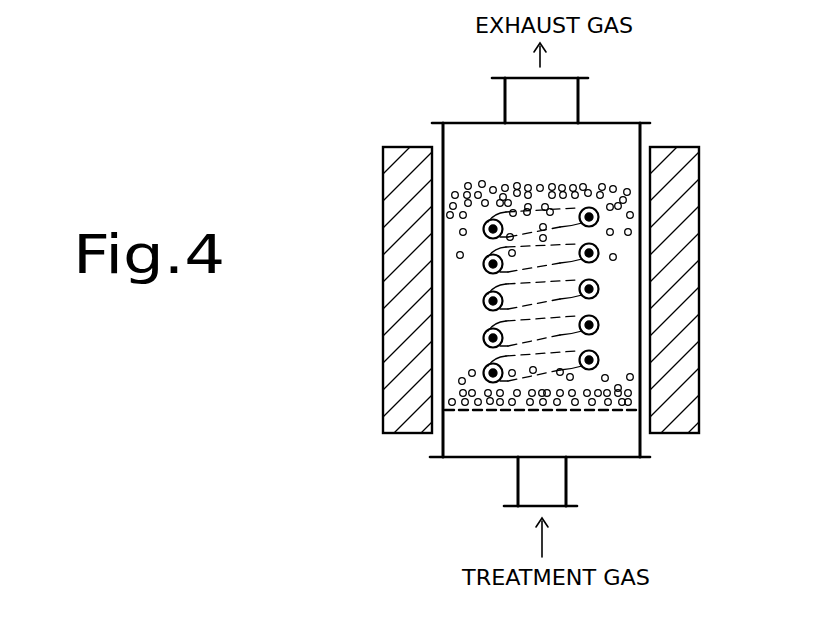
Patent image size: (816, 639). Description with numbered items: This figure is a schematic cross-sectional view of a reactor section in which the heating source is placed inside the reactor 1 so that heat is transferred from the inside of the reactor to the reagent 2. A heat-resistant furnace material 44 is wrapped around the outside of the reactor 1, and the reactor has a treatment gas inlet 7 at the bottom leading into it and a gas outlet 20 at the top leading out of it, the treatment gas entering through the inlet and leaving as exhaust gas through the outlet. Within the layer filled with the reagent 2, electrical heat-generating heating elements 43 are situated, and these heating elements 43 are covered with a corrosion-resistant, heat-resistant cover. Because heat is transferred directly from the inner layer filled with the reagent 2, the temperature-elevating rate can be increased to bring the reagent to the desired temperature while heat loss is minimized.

The reactor 1 is at (596, 140).
The reagent 2 is at (503, 188).
The treatment gas inlet 7 is at (545, 508).
The gas outlet 20 is at (565, 75).
The electrical heat-generating heating elements 43 is at (598, 321).
The heat-resistant furnace material 44 is at (382, 280).